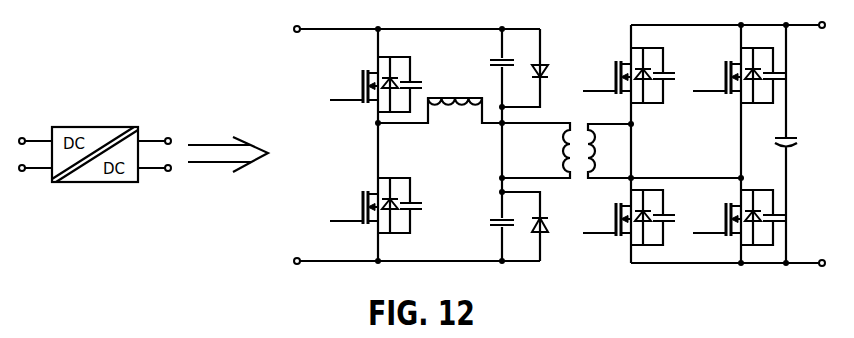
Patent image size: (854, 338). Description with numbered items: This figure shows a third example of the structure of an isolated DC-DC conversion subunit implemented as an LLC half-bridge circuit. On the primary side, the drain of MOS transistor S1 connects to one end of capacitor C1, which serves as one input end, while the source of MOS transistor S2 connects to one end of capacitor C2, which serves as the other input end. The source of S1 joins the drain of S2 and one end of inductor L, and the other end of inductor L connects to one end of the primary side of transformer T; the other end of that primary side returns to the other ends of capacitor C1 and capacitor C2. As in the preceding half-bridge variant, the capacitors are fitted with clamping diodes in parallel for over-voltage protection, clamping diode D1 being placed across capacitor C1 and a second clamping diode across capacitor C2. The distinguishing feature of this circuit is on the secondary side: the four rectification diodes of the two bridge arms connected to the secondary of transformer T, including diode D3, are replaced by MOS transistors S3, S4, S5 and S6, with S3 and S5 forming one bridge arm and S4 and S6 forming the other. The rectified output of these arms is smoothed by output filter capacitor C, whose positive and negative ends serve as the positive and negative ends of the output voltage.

The MOS transistor S1 is at (376, 84).
The MOS transistor S2 is at (376, 205).
The MOS transistor S3 is at (629, 75).
The MOS transistor S4 is at (739, 75).
The MOS transistor S5 is at (629, 217).
The MOS transistor S6 is at (739, 217).
The inductor L is at (455, 89).
The capacitor C1 is at (487, 60).
The capacitor C2 is at (487, 227).
The clamping diode D1 is at (554, 76).
The diode D3 is at (554, 230).
The transformer T is at (579, 171).
The output filter capacitor C is at (797, 144).